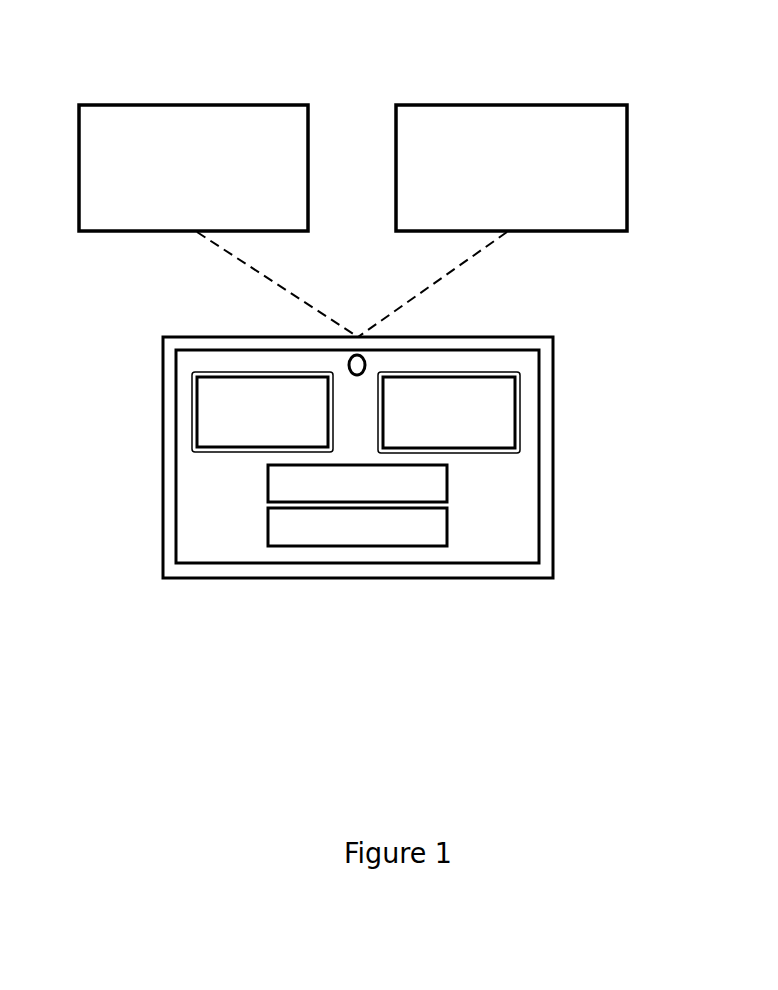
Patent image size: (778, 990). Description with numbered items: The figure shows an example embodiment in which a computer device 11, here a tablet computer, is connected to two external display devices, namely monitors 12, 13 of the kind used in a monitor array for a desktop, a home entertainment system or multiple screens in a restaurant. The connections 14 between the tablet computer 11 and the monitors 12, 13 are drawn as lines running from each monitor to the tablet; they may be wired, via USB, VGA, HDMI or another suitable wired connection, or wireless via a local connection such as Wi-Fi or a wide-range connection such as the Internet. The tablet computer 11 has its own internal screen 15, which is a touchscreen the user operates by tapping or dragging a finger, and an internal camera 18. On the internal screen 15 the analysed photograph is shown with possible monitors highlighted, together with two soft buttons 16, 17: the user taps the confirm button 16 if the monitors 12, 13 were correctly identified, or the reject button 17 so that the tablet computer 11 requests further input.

The computer device 11 is at (553, 457).
The monitor 12 is at (511, 105).
The monitor 13 is at (193, 105).
The connections 14 is at (432, 285).
The internal screen 15 is at (357, 566).
The soft button 16 is at (268, 484).
The soft button 17 is at (268, 527).
The internal camera 18 is at (366, 361).